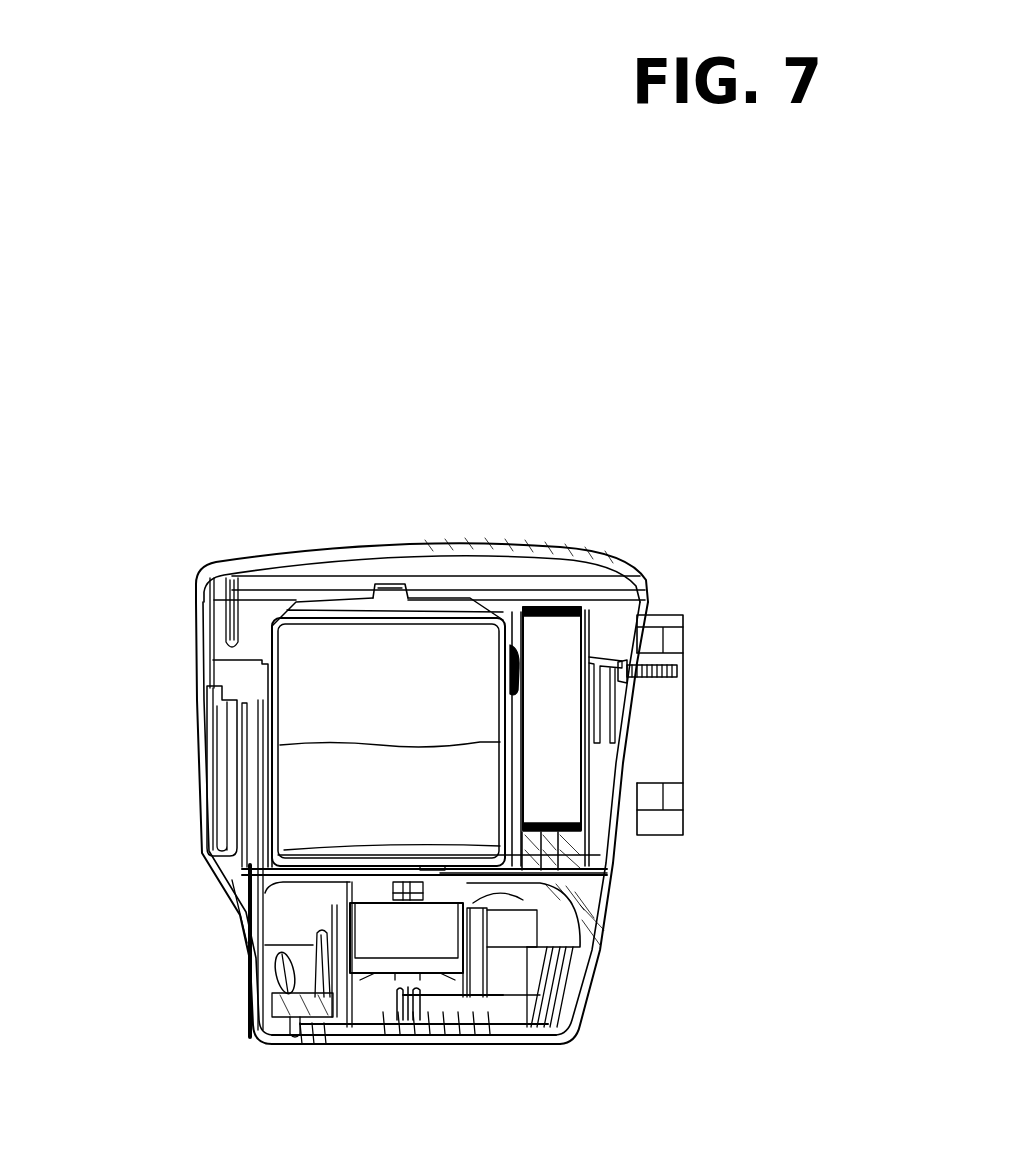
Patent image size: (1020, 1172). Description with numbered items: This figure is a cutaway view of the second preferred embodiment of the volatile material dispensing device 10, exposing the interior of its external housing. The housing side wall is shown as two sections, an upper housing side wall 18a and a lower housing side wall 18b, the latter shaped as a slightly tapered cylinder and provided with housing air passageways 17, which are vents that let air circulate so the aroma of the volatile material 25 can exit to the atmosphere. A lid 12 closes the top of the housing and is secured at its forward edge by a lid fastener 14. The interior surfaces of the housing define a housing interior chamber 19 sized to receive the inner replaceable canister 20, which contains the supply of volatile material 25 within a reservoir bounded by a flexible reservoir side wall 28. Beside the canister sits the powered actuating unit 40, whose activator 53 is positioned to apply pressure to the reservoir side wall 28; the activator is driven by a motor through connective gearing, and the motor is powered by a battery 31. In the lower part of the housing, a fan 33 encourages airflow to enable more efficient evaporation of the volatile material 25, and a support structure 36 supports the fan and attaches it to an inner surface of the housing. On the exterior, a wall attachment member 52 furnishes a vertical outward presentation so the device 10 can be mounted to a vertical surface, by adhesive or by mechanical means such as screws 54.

The volatile material dispensing device 10 is at (580, 308).
The lid 12 is at (345, 555).
The lid fastener 14 is at (205, 580).
The housing air passageways 17 is at (280, 968).
The upper housing side wall 18a is at (190, 755).
The lower housing side wall 18b is at (252, 960).
The housing interior chamber 19 is at (265, 698).
The inner replaceable canister 20 is at (425, 585).
The volatile material 25 is at (355, 745).
The reservoir side wall 28 is at (505, 757).
The battery 31 is at (555, 640).
The fan 33 is at (385, 935).
The support structure 36 is at (410, 1003).
The powered actuating unit 40 is at (603, 497).
The wall attachment member 52 is at (670, 760).
The activator 53 is at (517, 683).
The screws 54 is at (660, 670).